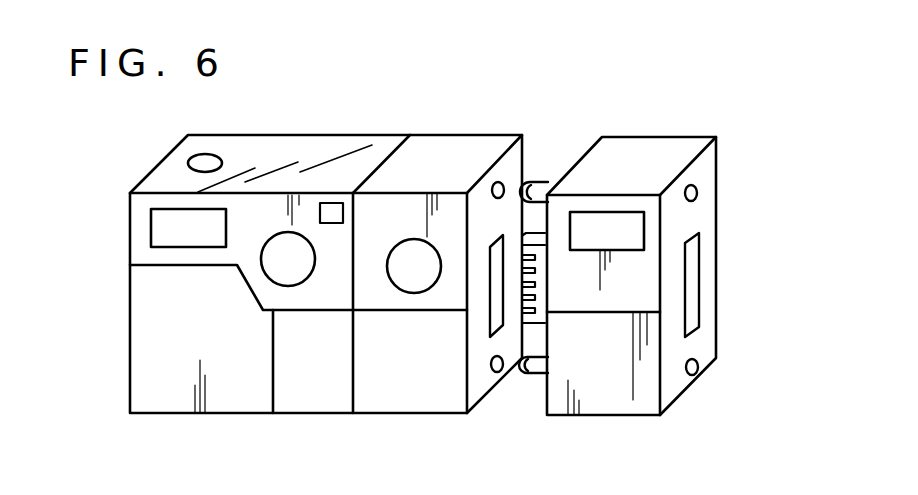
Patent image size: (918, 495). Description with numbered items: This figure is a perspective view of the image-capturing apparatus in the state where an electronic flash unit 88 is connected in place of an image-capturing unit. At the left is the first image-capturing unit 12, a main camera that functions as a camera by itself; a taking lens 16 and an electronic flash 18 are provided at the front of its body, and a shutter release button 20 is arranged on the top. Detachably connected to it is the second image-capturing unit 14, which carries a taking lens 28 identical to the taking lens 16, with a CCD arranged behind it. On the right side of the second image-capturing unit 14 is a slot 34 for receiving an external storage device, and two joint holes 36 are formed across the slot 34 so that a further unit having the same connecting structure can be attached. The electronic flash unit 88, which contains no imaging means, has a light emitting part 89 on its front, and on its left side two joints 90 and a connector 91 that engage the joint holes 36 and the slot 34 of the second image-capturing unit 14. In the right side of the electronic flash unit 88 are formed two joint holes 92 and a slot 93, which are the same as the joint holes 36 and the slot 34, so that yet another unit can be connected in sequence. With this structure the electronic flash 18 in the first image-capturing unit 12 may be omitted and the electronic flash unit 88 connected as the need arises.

The first image-capturing unit 12 is at (173, 345).
The second image-capturing unit 14 is at (412, 383).
The taking lens 16 is at (270, 272).
The electronic flash 18 is at (167, 231).
The shutter release button 20 is at (190, 163).
The taking lens 28 is at (408, 281).
The slot 34 is at (494, 318).
The joint holes 36 is at (498, 182).
The electronic flash unit 88 is at (620, 160).
The light emitting part 89 is at (622, 233).
The joints 90 is at (537, 187).
The connector 91 is at (542, 283).
The joint holes 92 is at (698, 190).
The slot 93 is at (690, 292).